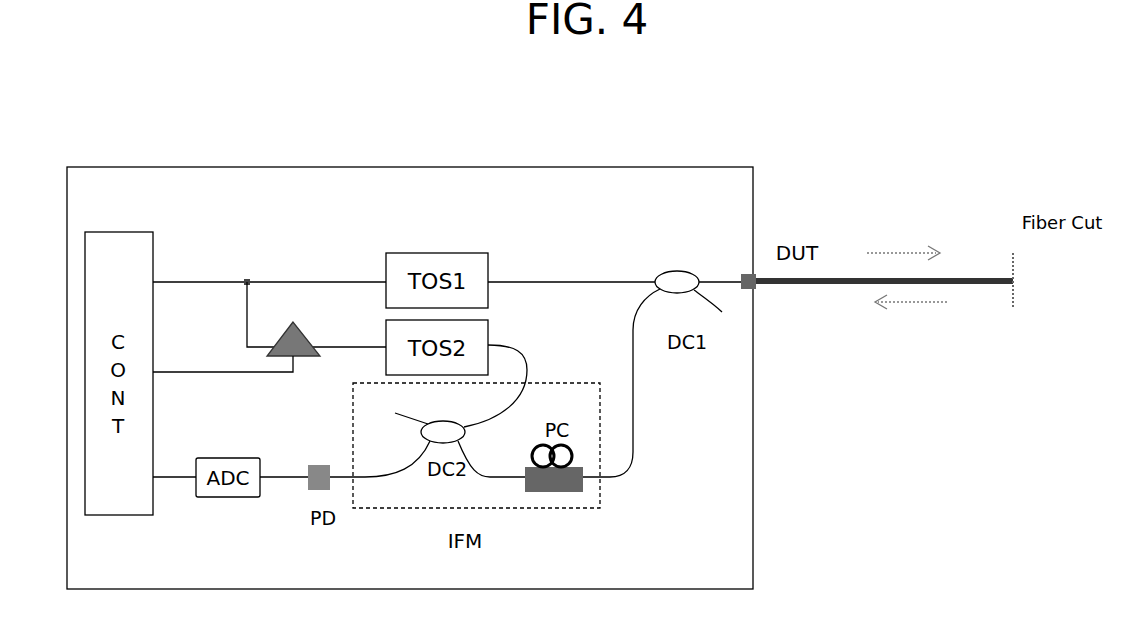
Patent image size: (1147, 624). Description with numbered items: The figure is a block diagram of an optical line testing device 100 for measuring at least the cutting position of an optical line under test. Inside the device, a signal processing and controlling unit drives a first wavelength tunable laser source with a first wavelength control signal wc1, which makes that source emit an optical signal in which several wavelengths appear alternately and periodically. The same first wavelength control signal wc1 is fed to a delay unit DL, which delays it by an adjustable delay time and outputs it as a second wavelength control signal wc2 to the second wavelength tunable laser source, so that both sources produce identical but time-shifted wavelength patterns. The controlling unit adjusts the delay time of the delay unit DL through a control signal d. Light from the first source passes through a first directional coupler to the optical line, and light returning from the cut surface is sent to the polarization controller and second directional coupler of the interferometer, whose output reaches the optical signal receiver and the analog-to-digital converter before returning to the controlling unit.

The optical line testing device 100 is at (363, 168).
The first wavelength control signal wc1 is at (298, 282).
The second wavelength control signal wc2 is at (348, 347).
The delay unit DL is at (286, 335).
The control signal d is at (215, 372).